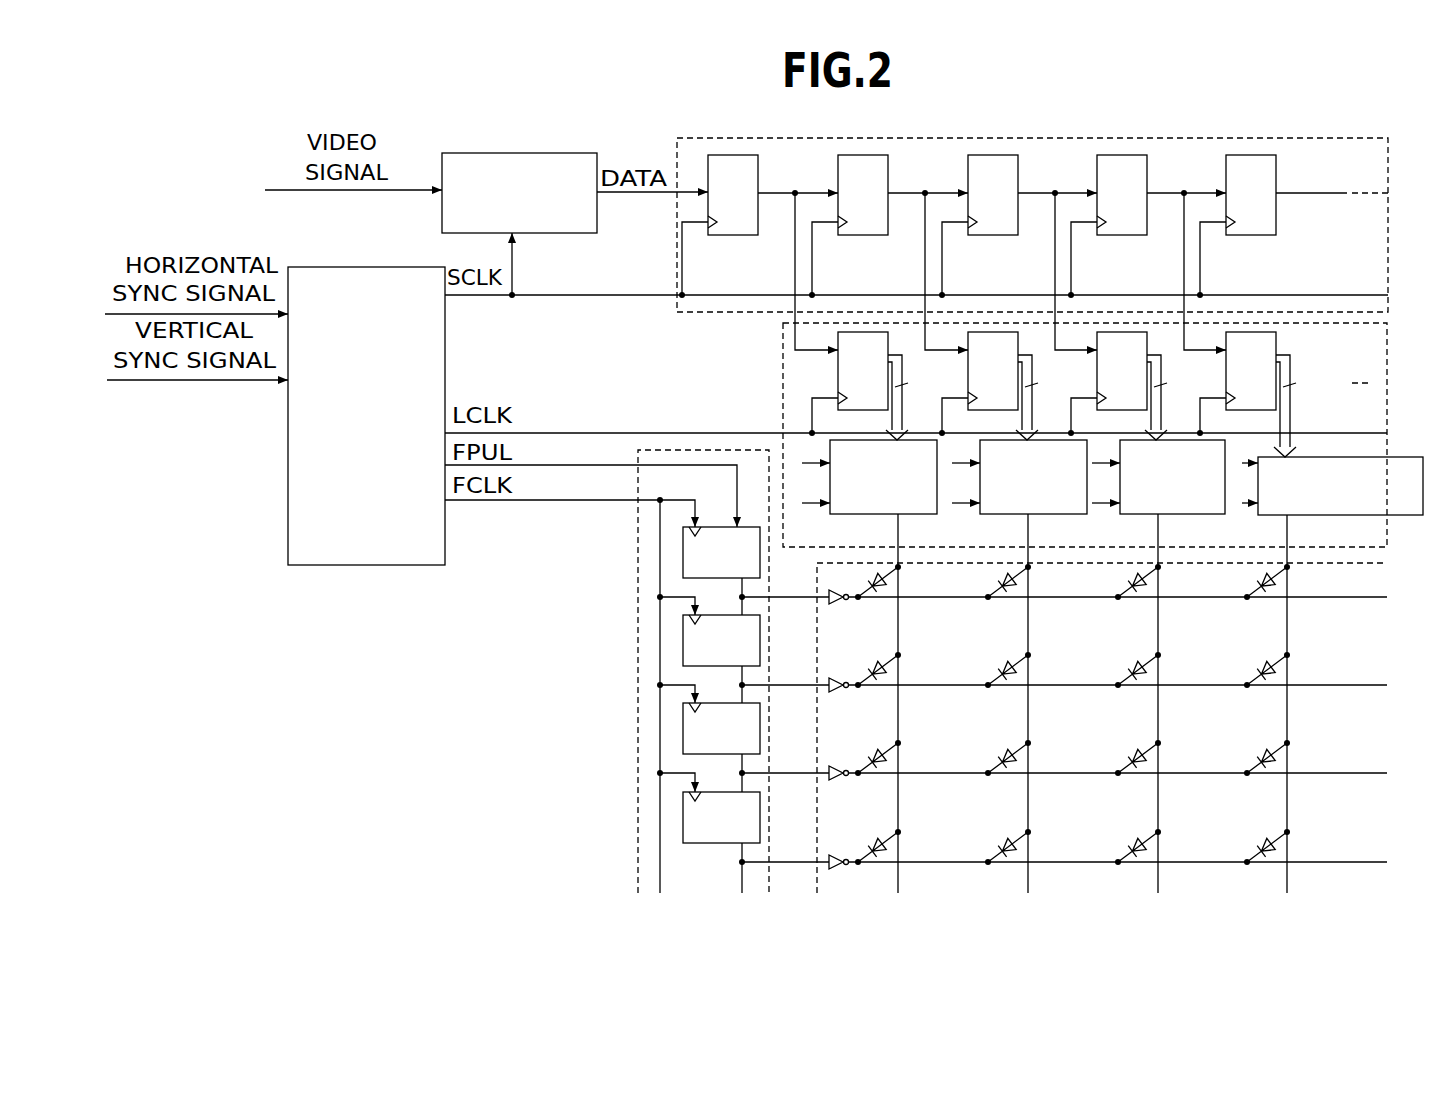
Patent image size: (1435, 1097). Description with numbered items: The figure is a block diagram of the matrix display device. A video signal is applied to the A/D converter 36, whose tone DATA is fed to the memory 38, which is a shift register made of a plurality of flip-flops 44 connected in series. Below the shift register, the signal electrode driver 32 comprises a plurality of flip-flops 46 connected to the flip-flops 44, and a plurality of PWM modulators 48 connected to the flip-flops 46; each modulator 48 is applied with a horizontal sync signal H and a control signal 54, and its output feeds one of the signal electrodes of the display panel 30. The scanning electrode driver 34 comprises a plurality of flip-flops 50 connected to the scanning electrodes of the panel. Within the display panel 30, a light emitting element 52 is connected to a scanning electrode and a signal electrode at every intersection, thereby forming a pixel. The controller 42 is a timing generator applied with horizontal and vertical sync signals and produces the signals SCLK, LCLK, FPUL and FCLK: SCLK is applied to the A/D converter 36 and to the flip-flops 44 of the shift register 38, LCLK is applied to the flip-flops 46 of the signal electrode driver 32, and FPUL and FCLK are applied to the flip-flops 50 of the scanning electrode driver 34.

The display panel 30 is at (1363, 563).
The signal electrode driver 32 is at (783, 377).
The scanning electrode driver 34 is at (638, 540).
The A/D converter 36 is at (553, 153).
The memory 38 is at (847, 138).
The controller 42 is at (397, 267).
The flip-flop 44 is at (758, 172).
The flip-flop 46 is at (888, 342).
The PWM modulator 48 is at (918, 442).
The flip-flop 50 is at (717, 527).
The light emitting element 52 is at (871, 576).
The control signal 54 is at (803, 508).